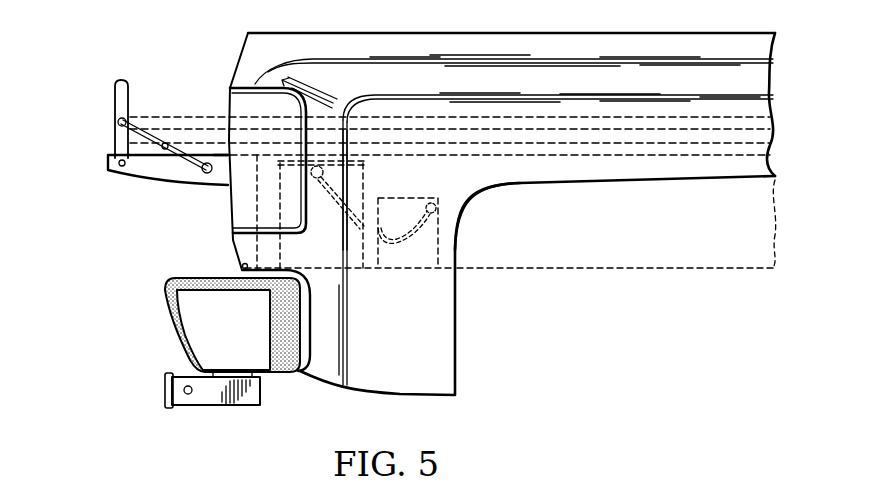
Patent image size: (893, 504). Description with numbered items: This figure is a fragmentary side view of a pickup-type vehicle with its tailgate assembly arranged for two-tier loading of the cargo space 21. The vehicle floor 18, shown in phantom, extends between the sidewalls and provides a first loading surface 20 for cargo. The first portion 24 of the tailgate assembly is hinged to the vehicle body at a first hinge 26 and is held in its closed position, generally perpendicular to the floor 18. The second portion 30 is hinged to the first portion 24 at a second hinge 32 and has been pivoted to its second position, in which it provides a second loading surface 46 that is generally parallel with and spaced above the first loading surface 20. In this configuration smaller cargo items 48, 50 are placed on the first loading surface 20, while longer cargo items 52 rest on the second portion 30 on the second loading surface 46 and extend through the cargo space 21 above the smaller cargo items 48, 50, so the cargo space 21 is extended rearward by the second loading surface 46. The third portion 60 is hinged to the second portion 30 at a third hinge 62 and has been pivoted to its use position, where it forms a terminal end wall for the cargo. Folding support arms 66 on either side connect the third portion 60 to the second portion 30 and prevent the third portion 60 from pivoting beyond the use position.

The floor 18 is at (543, 267).
The first loading surface 20 is at (446, 258).
The cargo space 21 is at (450, 170).
The first portion 24 is at (229, 202).
The first hinge 26 is at (235, 272).
The second portion 30 is at (147, 182).
The second hinge 32 is at (244, 166).
The second loading surface 46 is at (218, 145).
The smaller cargo item 48 is at (335, 251).
The smaller cargo item 50 is at (422, 266).
The longer cargo items 52 is at (155, 116).
The third portion 60 is at (115, 97).
The third hinge 62 is at (112, 167).
The folding support arm 66 is at (143, 143).